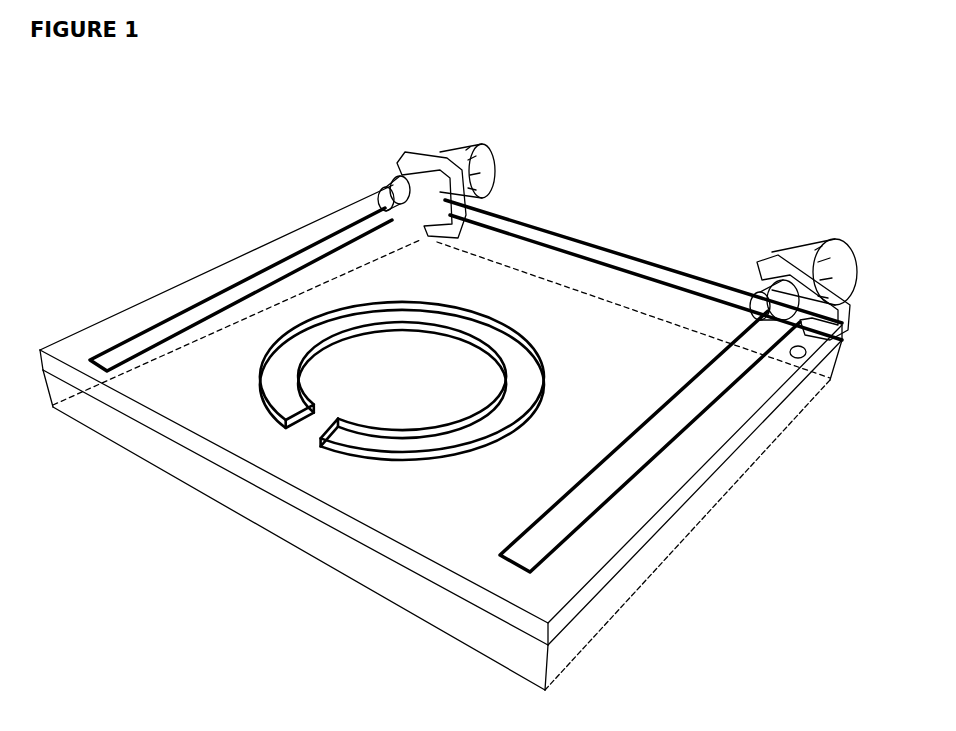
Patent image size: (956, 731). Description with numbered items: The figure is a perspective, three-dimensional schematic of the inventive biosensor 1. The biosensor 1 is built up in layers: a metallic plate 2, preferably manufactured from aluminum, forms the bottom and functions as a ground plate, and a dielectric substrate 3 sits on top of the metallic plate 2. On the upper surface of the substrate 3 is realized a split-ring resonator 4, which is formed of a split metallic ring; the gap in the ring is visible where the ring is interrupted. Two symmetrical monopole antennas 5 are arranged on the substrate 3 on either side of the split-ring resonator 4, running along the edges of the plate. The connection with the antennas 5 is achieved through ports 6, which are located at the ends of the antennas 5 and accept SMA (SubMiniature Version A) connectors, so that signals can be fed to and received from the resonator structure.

The biosensor 1 is at (210, 197).
The metallic plate 2 is at (312, 538).
The substrate 3 is at (402, 553).
The split-ring resonator 4 is at (428, 330).
The antenna 5 is at (183, 334).
The port 6 is at (505, 151).